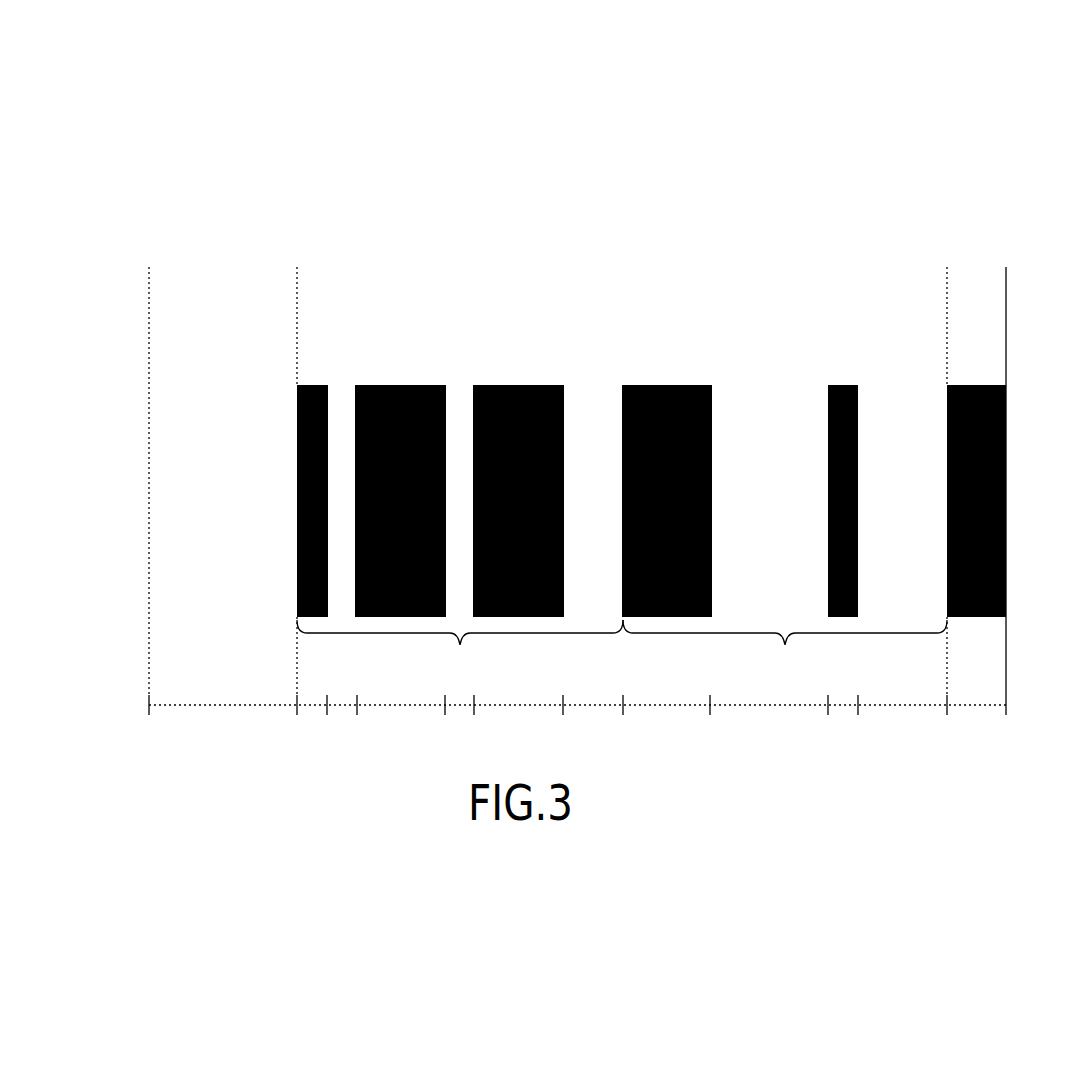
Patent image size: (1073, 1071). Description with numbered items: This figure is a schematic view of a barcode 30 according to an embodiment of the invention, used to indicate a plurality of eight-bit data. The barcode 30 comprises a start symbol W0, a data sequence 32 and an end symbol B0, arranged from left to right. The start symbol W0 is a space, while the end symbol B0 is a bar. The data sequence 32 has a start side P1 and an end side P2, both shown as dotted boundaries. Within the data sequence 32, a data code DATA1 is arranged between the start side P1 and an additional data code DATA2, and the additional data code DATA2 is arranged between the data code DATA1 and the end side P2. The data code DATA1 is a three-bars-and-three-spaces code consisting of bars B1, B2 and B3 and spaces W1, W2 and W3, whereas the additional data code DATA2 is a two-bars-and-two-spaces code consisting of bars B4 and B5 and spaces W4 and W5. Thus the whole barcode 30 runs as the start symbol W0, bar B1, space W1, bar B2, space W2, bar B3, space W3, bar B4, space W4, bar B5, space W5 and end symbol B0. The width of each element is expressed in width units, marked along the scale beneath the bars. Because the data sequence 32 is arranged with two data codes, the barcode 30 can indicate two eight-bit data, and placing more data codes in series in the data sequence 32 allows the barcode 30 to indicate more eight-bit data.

The barcode 30 is at (143, 164).
The data sequence 32 is at (647, 193).
The start side P1 is at (297, 291).
The end side P2 is at (947, 293).
The start symbol W0 is at (223, 366).
The space W1 is at (342, 366).
The space W2 is at (460, 366).
The space W3 is at (593, 366).
The space W4 is at (772, 366).
The space W5 is at (902, 366).
The end symbol B0 is at (976, 366).
The bar B1 is at (311, 366).
The bar B2 is at (400, 366).
The bar B3 is at (518, 366).
The bar B4 is at (667, 366).
The bar B5 is at (843, 366).
The data code DATA1 is at (460, 652).
The additional data code DATA2 is at (785, 652).